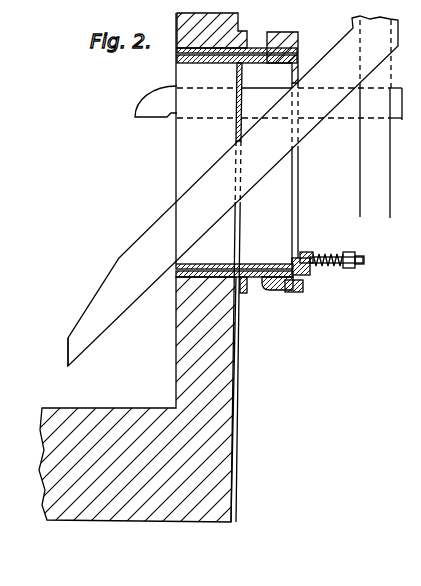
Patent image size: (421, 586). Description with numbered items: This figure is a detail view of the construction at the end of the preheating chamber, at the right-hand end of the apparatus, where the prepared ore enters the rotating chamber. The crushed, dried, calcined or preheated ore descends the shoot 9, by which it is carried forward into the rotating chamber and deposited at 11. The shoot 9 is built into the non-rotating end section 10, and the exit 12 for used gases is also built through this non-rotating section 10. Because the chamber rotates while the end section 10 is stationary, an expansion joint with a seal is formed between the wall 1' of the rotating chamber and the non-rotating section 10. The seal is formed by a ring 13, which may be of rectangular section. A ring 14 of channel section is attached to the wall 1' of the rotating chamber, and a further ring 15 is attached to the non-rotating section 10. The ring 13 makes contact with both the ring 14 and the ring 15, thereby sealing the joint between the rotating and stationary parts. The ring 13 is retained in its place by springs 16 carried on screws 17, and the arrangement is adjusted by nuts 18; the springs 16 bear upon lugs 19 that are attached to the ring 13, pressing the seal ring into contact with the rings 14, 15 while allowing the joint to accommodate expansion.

The wall of the rotating chamber 1' is at (168, 267).
The shoot 9 is at (233, 191).
The non-rotating end section 10 is at (181, 134).
The deposit point 11 is at (68, 378).
The exit for used gases 12 is at (347, 115).
The ring 13 is at (268, 289).
The ring of channel section 14 is at (258, 281).
The ring 15 is at (243, 265).
The springs 16 is at (313, 251).
The screws 17 is at (364, 259).
The nuts 18 is at (347, 265).
The lugs 19 is at (305, 276).